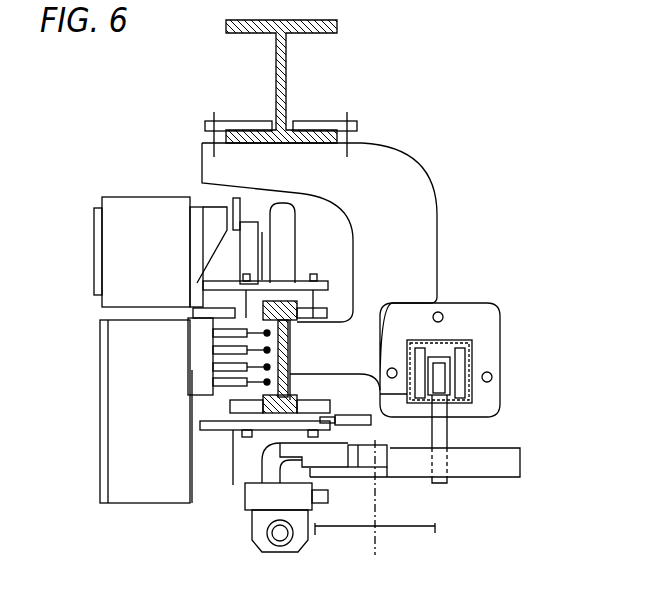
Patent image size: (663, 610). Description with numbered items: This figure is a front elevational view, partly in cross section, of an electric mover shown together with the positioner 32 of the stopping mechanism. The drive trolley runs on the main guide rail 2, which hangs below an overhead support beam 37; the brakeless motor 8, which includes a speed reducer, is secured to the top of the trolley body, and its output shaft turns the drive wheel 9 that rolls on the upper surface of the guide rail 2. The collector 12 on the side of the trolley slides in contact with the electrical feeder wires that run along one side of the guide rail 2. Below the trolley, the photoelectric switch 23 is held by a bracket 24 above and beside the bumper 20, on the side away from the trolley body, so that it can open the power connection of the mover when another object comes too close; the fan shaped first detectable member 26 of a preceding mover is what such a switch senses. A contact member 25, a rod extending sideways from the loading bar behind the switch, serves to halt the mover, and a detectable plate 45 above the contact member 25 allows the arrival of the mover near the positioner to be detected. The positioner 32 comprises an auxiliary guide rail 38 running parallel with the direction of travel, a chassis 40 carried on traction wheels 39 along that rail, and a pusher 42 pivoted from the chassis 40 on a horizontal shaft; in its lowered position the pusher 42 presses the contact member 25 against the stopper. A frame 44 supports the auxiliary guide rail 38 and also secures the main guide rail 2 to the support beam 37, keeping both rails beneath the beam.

The guide rail 2 is at (280, 265).
The brakeless motor 8 is at (148, 213).
The drive wheel 9 is at (282, 223).
The collector 12 is at (208, 360).
The bumper 20 is at (262, 502).
The photoelectric switch 23 is at (378, 455).
The bracket 24 is at (332, 457).
The contact member 25 is at (503, 463).
The first detectable member 26 is at (395, 527).
The positioner 32 is at (507, 345).
The support beam 37 is at (281, 72).
The auxiliary guide rail 38 is at (460, 345).
The traction wheels 39 is at (460, 360).
The chassis 40 is at (440, 360).
The pusher 42 is at (440, 435).
The frame 44 is at (415, 200).
The detectable plate 45 is at (353, 420).